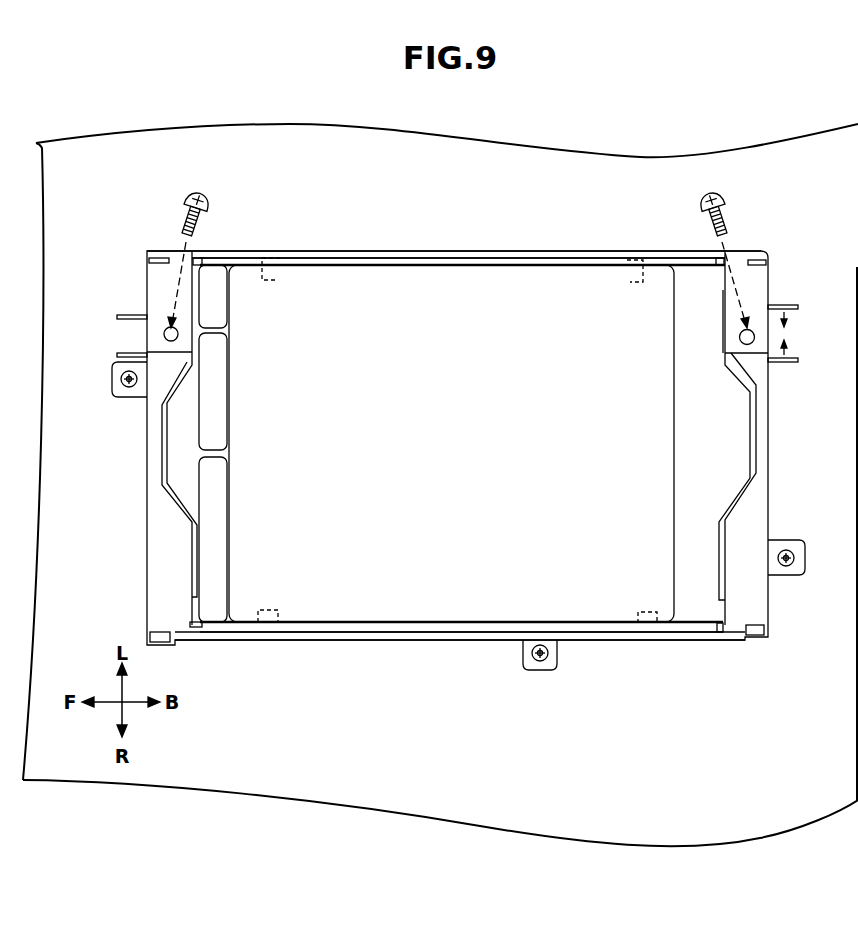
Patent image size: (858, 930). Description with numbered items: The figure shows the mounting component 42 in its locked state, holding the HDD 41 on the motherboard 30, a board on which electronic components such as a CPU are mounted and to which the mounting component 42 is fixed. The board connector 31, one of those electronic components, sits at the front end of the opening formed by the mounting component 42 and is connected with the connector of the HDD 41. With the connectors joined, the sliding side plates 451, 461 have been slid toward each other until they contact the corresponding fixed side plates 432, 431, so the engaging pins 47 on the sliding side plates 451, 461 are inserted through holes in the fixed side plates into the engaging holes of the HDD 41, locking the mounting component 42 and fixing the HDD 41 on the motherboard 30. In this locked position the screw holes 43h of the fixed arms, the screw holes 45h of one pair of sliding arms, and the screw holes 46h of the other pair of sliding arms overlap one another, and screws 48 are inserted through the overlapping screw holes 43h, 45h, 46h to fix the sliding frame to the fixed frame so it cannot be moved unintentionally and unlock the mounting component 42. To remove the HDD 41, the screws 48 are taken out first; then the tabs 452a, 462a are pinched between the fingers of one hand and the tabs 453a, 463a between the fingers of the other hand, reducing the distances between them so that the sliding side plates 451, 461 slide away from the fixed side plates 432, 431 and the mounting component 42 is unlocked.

The motherboard 30 is at (790, 157).
The board connector 31 is at (207, 418).
The HDD 41 is at (433, 449).
The mounting component 42 is at (122, 190).
The screw holes 43h is at (454, 269).
The screw holes 45h is at (454, 269).
The screw holes 46h is at (167, 328).
The engaging pins 47 is at (281, 257).
The screws 48 is at (213, 200).
The fixed side plate 431 is at (385, 628).
The fixed side plate 432 is at (473, 263).
The sliding side plate 451 is at (423, 251).
The tab 452a is at (793, 363).
The tab 453a is at (117, 356).
The sliding side plate 461 is at (330, 638).
The tab 462a is at (787, 306).
The tab 463a is at (117, 316).